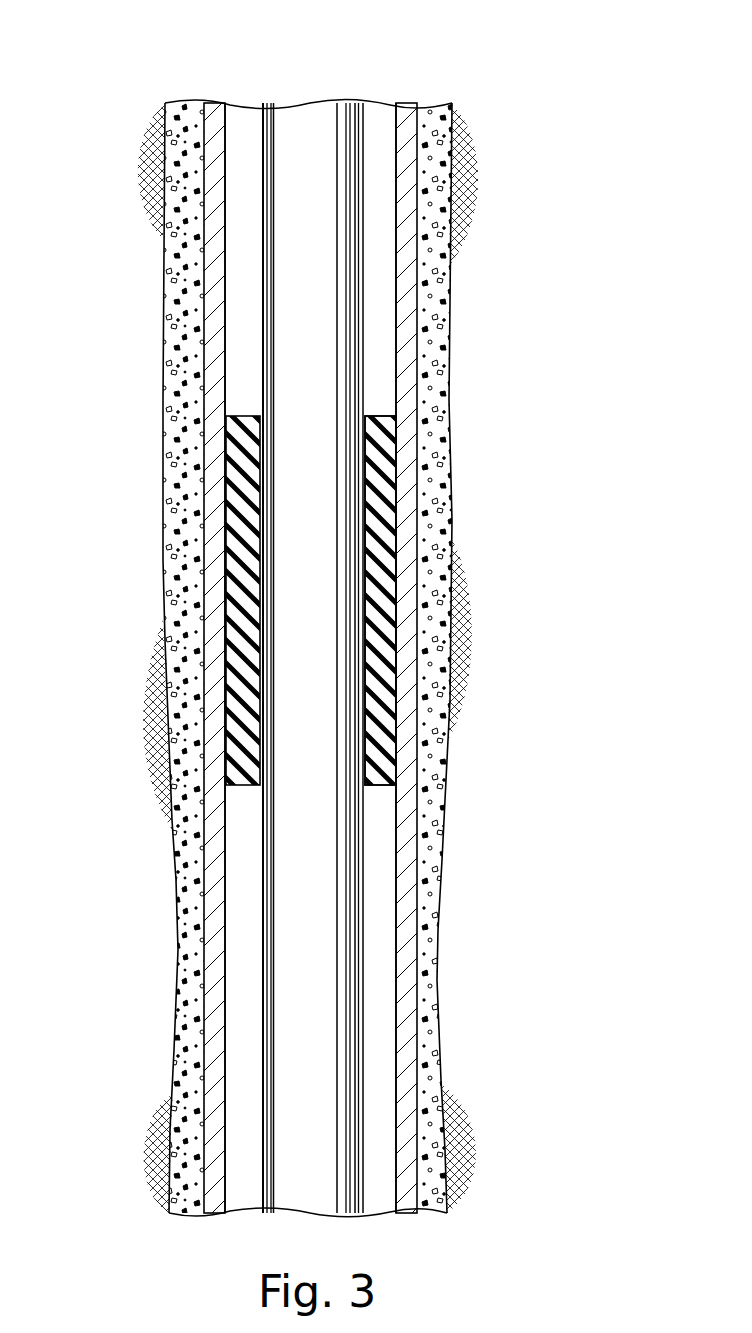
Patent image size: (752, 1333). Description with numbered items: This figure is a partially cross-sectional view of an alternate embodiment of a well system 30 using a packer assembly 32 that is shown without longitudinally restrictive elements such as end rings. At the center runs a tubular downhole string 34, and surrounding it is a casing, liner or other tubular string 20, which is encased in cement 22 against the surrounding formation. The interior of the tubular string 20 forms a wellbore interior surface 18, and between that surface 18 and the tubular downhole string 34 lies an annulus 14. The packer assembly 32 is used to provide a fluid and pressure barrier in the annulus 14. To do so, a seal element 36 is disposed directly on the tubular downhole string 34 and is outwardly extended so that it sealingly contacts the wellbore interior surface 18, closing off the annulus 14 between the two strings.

The well system 30 is at (572, 52).
The annulus 14 is at (383, 366).
The wellbore interior surface 18 is at (393, 822).
The tubular string 20 is at (172, 1070).
The cement 22 is at (203, 940).
The packer assembly 32 is at (240, 787).
The tubular downhole string 34 is at (261, 343).
The seal element 36 is at (397, 520).